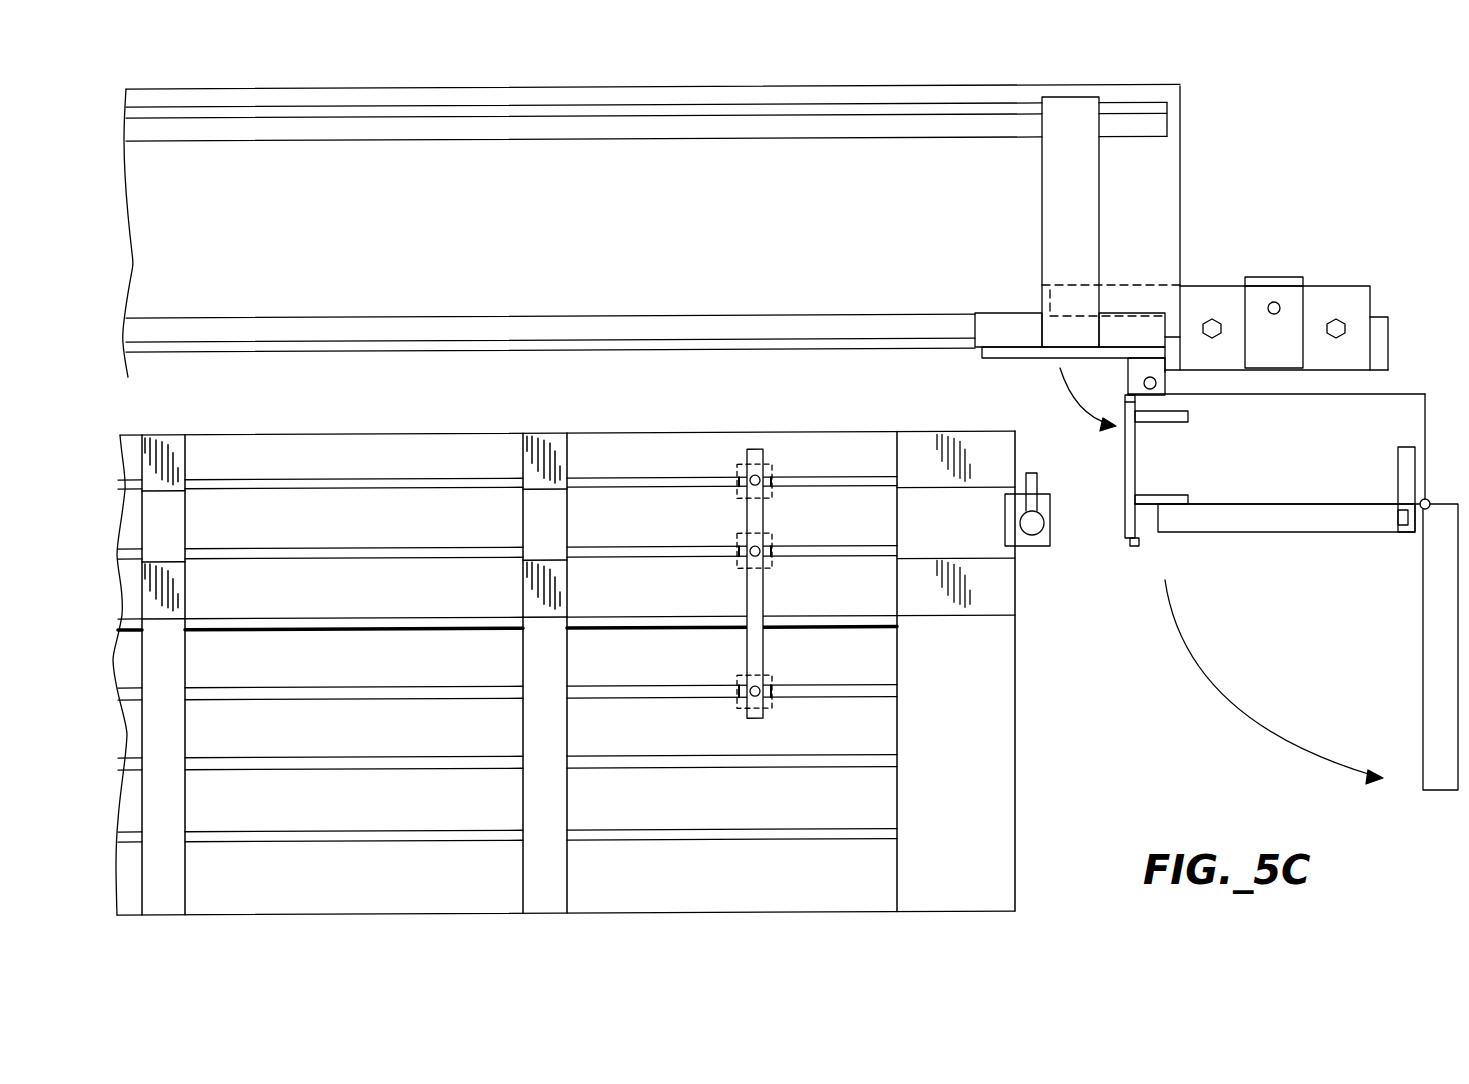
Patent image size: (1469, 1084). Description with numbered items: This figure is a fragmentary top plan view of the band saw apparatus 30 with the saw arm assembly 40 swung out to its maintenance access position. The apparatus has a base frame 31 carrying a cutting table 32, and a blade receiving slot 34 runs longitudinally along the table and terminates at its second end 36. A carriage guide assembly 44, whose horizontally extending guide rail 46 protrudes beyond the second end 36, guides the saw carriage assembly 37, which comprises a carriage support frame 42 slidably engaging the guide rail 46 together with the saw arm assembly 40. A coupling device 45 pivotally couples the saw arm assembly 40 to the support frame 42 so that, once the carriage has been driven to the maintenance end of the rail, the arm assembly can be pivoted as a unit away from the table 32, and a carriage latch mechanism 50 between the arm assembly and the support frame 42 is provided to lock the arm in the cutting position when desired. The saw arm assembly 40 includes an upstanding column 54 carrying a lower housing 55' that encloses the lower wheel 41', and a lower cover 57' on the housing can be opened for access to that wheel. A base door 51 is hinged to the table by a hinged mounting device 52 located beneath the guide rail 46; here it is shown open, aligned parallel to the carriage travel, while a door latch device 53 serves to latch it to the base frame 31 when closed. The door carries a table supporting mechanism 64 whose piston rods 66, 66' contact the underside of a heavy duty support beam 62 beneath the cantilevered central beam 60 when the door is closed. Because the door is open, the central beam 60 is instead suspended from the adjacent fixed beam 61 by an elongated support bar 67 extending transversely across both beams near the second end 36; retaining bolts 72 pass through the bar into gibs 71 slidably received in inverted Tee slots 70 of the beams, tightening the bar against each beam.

The band saw apparatus 30 is at (1311, 171).
The base frame 31 is at (1015, 890).
The cutting table 32 is at (814, 884).
The blade receiving slot 34 is at (402, 622).
The second end 36 is at (897, 738).
The saw carriage assembly 37 is at (1043, 176).
The saw arm assembly 40 is at (1318, 489).
The lower wheel 41' is at (1286, 536).
The carriage support frame 42 is at (1090, 178).
The carriage guide assembly 44 is at (203, 91).
The coupling device 45 is at (1158, 387).
The guide rail 46 is at (1177, 206).
The carriage latch mechanism 50 is at (1133, 548).
The base door 51 is at (1332, 286).
The hinged mounting device 52 is at (1042, 291).
The door latch device 53 is at (1272, 277).
The upstanding column 54 is at (1125, 473).
The lower housing 55' is at (1297, 375).
The lower cover 57' is at (1410, 647).
The central beam member 60 is at (403, 435).
The fixed beam member 61 is at (420, 898).
The support beam 62 is at (990, 614).
The table supporting mechanism 64 is at (1223, 355).
The piston rod 66 is at (1368, 312).
The piston rod 66' is at (1234, 289).
The support bar 67 is at (745, 660).
The inverted Tee slot 70 is at (886, 482).
The gib 71 is at (773, 466).
The retaining bolt 72 is at (752, 490).